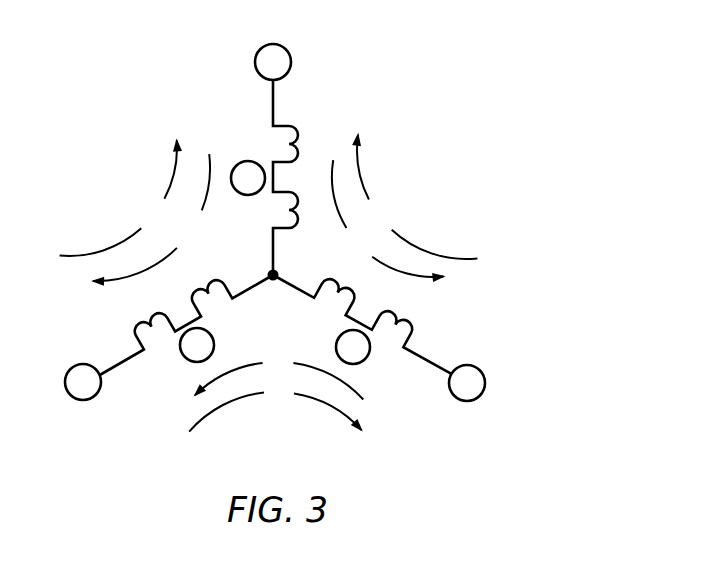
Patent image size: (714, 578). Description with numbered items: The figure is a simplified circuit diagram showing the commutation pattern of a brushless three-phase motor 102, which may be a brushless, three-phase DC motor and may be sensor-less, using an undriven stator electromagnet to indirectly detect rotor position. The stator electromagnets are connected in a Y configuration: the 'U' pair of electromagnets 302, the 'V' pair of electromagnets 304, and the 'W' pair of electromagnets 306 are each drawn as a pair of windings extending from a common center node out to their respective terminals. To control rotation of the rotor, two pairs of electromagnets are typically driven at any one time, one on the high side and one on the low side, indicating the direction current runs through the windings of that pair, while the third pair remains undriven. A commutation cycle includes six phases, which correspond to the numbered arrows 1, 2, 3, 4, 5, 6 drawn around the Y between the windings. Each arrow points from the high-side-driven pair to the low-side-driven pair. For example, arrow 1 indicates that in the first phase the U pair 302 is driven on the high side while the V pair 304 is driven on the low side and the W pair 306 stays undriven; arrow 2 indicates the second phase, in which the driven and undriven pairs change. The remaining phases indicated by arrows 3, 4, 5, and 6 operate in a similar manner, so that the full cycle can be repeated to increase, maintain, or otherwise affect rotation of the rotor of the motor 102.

The motor 102 is at (432, 91).
The 'U' pair of electromagnets 302 is at (263, 78).
The 'V' pair of electromagnets 304 is at (450, 385).
The 'W' pair of electromagnets 306 is at (188, 360).
The first phase arrow 1 is at (389, 221).
The second phase arrow 2 is at (150, 220).
The third phase arrow 3 is at (279, 376).
The fourth phase arrow 4 is at (414, 196).
The fifth phase arrow 5 is at (121, 198).
The sixth phase arrow 6 is at (276, 407).